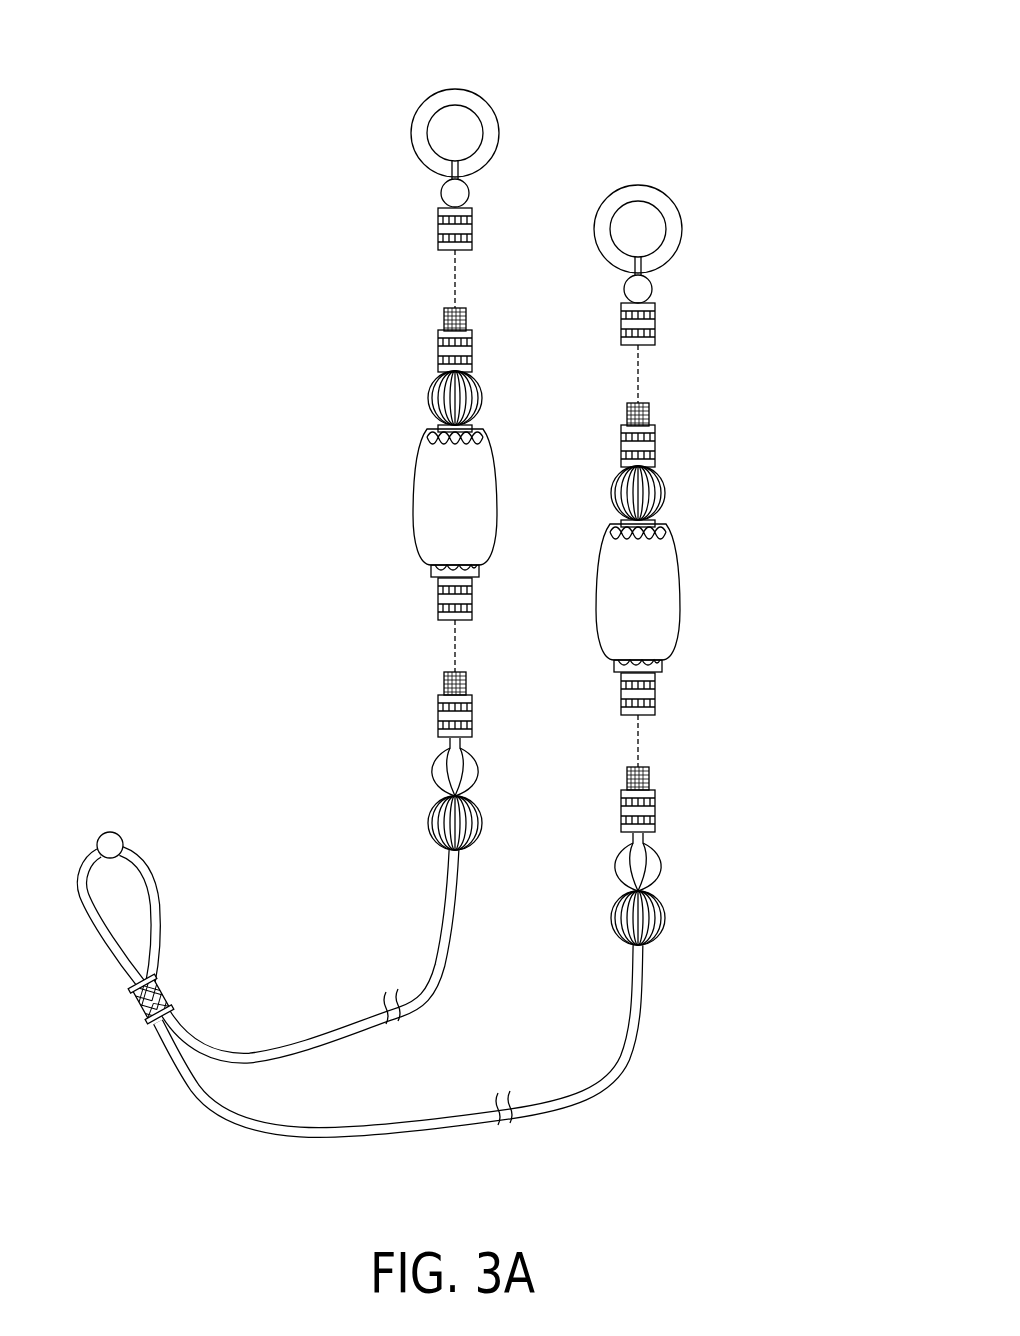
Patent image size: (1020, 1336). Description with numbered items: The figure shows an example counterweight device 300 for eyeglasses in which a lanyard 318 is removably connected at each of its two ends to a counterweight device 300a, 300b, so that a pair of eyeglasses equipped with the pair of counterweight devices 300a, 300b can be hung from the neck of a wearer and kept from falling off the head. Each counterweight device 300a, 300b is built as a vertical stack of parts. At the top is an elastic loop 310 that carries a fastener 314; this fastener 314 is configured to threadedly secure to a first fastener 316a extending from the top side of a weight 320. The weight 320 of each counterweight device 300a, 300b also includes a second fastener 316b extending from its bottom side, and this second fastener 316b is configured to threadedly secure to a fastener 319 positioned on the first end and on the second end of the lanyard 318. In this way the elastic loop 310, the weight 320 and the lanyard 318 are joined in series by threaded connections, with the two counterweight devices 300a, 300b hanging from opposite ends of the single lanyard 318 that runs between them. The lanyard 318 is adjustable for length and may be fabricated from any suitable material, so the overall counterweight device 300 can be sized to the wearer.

The counterweight device for eyeglasses 300 is at (686, 104).
The counterweight device 300a is at (473, 107).
The counterweight device 300b is at (658, 203).
The elastic loop 310 is at (490, 135).
The fastener 314 is at (457, 232).
The first fastener 316a is at (457, 350).
The second fastener 316b is at (458, 600).
The lanyard 318 is at (150, 893).
The fastener 319 is at (458, 715).
The weight 320 is at (460, 512).